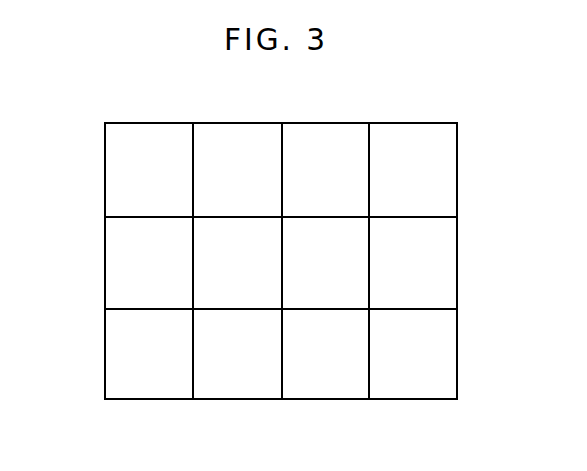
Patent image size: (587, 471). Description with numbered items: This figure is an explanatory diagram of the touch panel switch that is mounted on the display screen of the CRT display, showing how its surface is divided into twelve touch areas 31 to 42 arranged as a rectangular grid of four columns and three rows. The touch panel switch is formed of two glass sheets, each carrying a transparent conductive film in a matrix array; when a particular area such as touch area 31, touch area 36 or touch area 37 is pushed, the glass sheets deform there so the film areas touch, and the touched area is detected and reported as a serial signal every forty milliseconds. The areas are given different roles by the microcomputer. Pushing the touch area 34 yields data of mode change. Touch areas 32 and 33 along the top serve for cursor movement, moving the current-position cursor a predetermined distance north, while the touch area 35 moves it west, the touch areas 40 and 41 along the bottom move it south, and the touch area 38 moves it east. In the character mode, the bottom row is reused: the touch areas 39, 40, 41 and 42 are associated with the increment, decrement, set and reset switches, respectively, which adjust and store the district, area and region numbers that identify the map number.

The touch area 31 is at (105, 168).
The touch area 32 is at (223, 130).
The touch area 33 is at (327, 130).
The touch area 34 is at (457, 166).
The touch area 35 is at (105, 271).
The touch area 36 is at (198, 285).
The touch area 37 is at (323, 298).
The touch area 38 is at (457, 265).
The touch area 39 is at (150, 399).
The touch area 40 is at (238, 399).
The touch area 41 is at (342, 399).
The touch area 42 is at (408, 399).